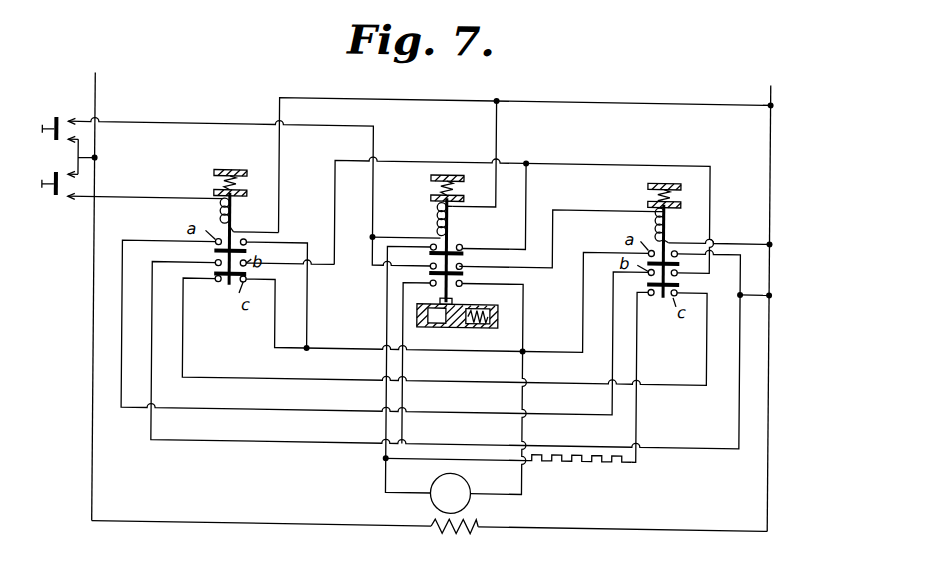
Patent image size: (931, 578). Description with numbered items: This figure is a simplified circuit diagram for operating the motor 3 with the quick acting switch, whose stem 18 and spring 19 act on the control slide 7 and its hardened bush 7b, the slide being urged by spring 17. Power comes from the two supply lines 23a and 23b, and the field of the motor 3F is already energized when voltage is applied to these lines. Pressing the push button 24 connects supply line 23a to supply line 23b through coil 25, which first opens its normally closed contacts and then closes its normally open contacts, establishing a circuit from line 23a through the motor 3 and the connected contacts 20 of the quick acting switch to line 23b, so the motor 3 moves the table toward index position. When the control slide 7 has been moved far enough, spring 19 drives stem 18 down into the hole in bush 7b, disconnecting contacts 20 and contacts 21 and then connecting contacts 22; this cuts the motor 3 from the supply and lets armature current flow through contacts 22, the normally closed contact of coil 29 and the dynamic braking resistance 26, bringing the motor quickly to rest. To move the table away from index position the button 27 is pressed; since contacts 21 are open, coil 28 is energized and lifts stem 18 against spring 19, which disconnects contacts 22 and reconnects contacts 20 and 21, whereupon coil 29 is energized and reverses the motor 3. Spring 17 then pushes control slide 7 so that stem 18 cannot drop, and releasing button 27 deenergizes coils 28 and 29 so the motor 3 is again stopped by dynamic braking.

The supply line 23a is at (81, 287).
The supply line 23b is at (790, 305).
The button 27 is at (42, 122).
The push button 24 is at (40, 176).
The coil 25 is at (239, 228).
The spring 19 is at (430, 190).
The coil 28 is at (437, 215).
The contact points 20 is at (463, 251).
The contact points 21 is at (463, 268).
The contact points 22 is at (463, 286).
The stem 18 is at (442, 293).
The control slide 7 is at (429, 325).
The bush 7b is at (438, 327).
The spring 17 is at (483, 327).
The coil 29 is at (674, 240).
The dynamic braking resistance 26 is at (562, 467).
The motor 3 is at (450, 493).
The field of the motor 3F is at (443, 531).